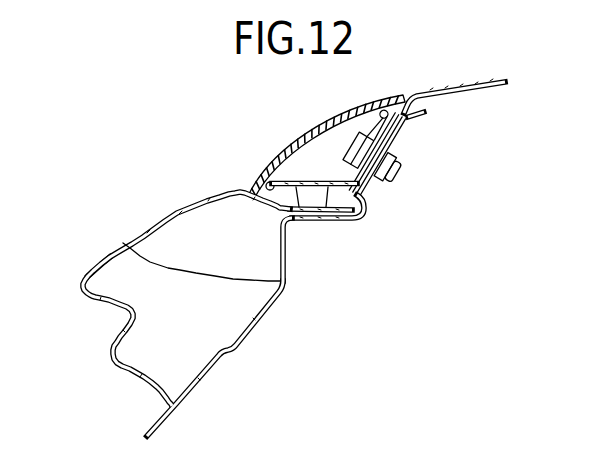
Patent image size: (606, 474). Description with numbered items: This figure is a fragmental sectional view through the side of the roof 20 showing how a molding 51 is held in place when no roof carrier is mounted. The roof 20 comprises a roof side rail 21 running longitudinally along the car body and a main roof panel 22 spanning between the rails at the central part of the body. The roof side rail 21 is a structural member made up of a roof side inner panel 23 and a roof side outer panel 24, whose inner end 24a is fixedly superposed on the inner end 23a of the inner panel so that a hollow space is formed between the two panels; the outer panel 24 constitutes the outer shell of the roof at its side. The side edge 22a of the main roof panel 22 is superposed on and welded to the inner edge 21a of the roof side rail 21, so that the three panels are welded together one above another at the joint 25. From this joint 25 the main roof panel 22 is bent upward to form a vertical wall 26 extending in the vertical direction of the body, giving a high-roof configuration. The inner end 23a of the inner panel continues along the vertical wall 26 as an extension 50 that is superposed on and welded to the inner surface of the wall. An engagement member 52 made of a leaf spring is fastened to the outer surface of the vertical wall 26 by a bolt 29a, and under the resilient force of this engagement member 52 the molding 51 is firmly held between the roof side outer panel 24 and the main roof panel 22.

The roof 20 is at (370, 103).
The roof side rail 21 is at (178, 295).
The inner edge of roof side rail 21a is at (396, 246).
The main roof panel 22 is at (450, 84).
The side edge of main roof panel 22a is at (326, 154).
The roof side inner panel 23 is at (123, 243).
The inner end of roof side inner panel 23a is at (343, 221).
The roof side outer panel 24 is at (174, 212).
The inner end of roof side outer panel 24a is at (364, 210).
The joint 25 is at (306, 234).
The vertical wall 26 is at (340, 181).
The bolt 29a is at (379, 124).
The extension 50 is at (374, 159).
The molding 51 is at (314, 126).
The engagement member 52 is at (318, 222).